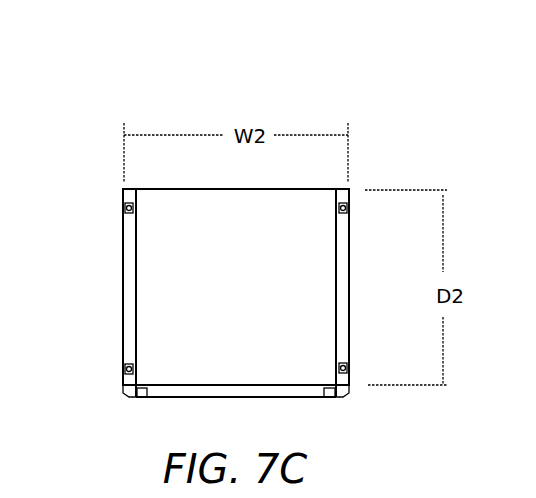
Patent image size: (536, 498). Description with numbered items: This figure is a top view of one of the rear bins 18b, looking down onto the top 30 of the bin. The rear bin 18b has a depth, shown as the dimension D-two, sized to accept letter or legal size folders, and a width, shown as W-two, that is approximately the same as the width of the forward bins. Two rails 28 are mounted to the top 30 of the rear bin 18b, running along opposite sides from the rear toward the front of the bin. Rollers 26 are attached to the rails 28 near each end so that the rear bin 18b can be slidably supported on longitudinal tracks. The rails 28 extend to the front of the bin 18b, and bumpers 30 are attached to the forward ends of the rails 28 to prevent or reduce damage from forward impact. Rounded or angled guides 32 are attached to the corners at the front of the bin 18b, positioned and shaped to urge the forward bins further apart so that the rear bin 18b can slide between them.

The rear bin 18b is at (96, 136).
The rollers 26 is at (125, 209).
The rails 28 is at (135, 293).
The top 30 is at (228, 321).
The guides 32 is at (128, 398).